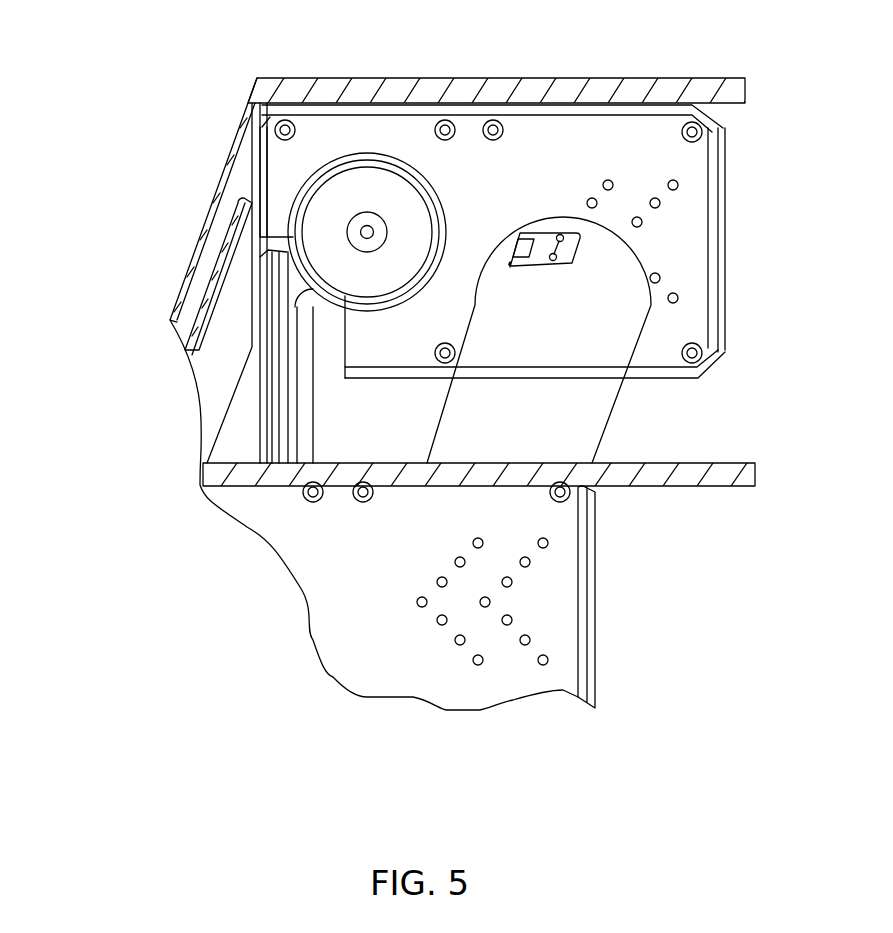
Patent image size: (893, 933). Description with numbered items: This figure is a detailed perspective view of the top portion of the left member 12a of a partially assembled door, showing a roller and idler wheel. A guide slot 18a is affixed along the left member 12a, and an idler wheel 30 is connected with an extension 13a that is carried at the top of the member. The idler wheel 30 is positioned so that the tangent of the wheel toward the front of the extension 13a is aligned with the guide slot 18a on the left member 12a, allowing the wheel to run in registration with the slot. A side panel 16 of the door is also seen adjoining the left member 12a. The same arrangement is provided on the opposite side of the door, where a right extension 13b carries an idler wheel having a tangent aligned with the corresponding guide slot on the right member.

The idler wheel 30 is at (343, 142).
The side panel 16 is at (226, 161).
The guide slot 18a is at (252, 405).
The left member 12a is at (236, 440).
The extension 13a is at (677, 238).
The right extension 13b is at (557, 603).